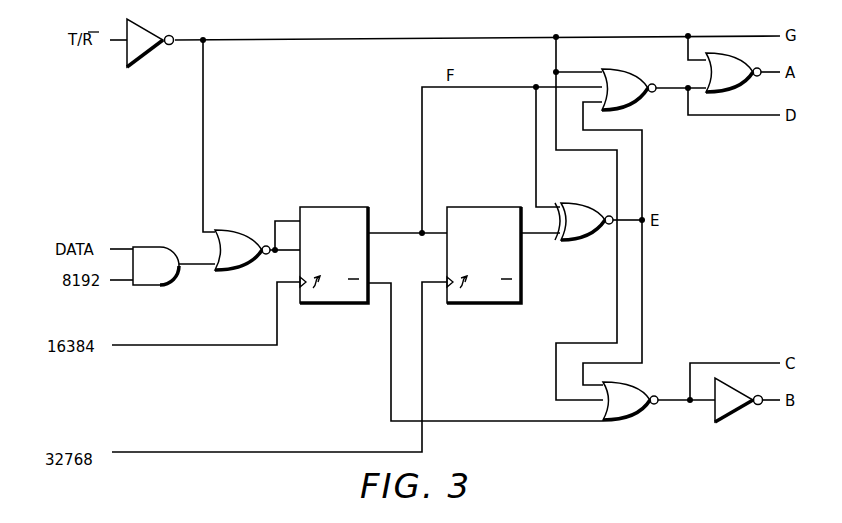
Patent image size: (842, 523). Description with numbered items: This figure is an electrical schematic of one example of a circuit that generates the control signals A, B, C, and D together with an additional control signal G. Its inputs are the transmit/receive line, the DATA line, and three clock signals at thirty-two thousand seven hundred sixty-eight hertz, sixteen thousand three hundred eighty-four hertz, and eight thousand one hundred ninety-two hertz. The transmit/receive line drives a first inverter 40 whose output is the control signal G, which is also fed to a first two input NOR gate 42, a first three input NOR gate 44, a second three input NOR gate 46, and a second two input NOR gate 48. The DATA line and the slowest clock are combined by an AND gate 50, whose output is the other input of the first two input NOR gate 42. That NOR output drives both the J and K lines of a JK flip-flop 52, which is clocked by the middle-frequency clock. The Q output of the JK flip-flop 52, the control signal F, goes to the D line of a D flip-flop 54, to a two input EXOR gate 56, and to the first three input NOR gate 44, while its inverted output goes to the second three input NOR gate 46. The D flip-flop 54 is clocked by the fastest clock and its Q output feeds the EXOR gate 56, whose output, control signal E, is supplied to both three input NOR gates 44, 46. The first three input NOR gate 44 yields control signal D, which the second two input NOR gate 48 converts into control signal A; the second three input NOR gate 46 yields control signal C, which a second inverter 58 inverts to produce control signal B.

The first inverter 40 is at (149, 30).
The first two input NOR gate 42 is at (253, 203).
The first three input NOR gate 44 is at (640, 50).
The second three input NOR gate 46 is at (630, 414).
The second two input NOR gate 48 is at (748, 46).
The AND gate 50 is at (163, 247).
The JK flip-flop 52 is at (343, 207).
The D flip-flop 54 is at (513, 182).
The two input EXOR gate 56 is at (570, 242).
The second inverter 58 is at (742, 406).